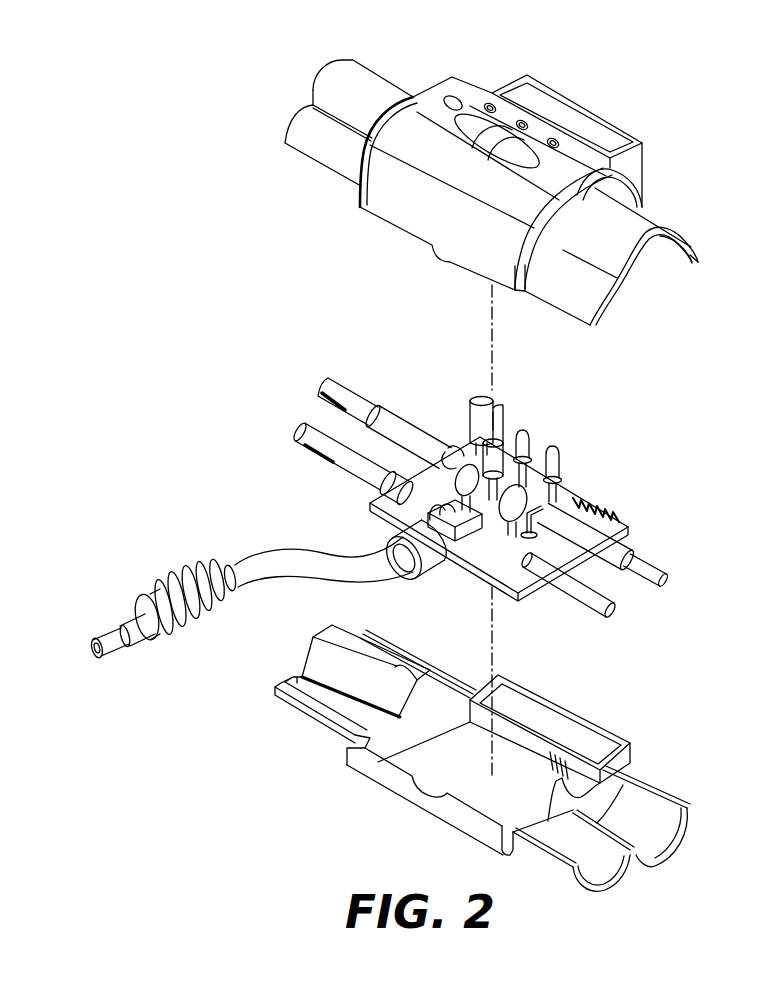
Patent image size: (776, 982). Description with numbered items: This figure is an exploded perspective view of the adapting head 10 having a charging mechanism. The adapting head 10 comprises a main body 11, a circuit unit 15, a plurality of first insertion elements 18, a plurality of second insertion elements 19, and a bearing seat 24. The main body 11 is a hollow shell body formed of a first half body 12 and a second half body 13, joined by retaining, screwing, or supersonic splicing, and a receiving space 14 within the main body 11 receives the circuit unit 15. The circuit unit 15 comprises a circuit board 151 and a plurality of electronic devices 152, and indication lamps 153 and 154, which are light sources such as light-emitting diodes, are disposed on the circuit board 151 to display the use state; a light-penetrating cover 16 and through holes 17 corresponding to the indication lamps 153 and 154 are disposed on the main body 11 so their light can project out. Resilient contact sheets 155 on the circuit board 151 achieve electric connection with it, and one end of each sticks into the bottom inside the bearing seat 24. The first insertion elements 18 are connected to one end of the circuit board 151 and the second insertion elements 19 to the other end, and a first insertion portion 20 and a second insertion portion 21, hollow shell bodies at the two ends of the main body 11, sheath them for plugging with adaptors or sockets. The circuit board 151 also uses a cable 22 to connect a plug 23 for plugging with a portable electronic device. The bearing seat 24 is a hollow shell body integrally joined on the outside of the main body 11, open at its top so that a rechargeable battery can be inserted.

The adapting head 10 is at (148, 298).
The main body 11 is at (415, 92).
The first half body 12 is at (383, 206).
The second half body 13 is at (370, 782).
The receiving space 14 is at (442, 770).
The circuit unit 15 is at (590, 477).
The light-penetrating cover 16 is at (488, 138).
The through holes 17 is at (565, 107).
The first insertion elements 18 is at (297, 447).
The second insertion elements 19 is at (595, 603).
The first insertion portion 20 is at (338, 87).
The second insertion portion 21 is at (615, 224).
The cable 22 is at (240, 575).
The plug 23 is at (117, 645).
The bearing seat 24 is at (632, 166).
The circuit board 151 is at (483, 572).
The electronic devices 152 is at (520, 530).
The indication lamps 153 is at (475, 442).
The indication lamps 154 is at (550, 447).
The resilient contact sheets 155 is at (613, 510).